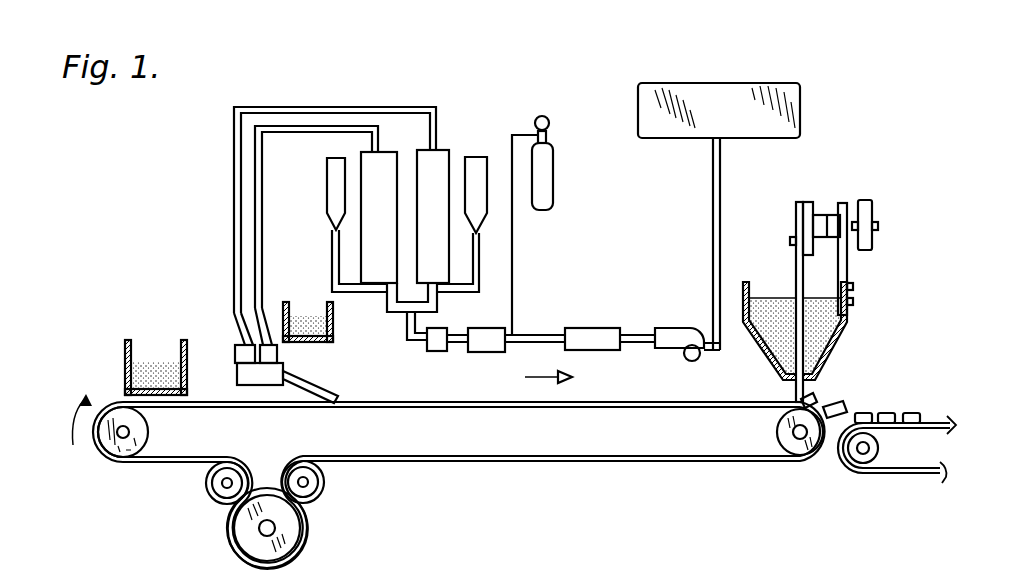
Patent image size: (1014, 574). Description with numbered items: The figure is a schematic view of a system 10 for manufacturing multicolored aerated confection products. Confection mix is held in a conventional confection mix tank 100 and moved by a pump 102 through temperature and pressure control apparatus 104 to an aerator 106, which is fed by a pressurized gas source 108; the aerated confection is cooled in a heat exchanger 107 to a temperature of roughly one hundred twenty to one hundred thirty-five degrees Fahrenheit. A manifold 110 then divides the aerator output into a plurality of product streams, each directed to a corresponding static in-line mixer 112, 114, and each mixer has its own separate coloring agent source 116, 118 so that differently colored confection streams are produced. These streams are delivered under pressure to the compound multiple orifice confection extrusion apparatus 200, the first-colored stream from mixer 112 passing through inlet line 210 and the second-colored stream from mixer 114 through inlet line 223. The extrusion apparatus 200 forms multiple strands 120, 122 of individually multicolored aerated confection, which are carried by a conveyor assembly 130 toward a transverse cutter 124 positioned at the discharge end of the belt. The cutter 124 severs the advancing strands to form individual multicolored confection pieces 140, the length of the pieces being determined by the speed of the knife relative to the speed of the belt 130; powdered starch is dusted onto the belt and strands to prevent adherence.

The system 10 is at (196, 258).
The confection mix tank 100 is at (710, 58).
The pump 102 is at (668, 328).
The temperature and pressure control apparatus 104 is at (598, 328).
The aerator 106 is at (488, 353).
The heat exchanger 107 is at (439, 352).
The pressurized gas source 108 is at (553, 178).
The manifold 110 is at (401, 314).
The static in-line mixer 112 is at (370, 168).
The static in-line mixer 114 is at (425, 160).
The coloring agent source 116 is at (325, 200).
The coloring agent source 118 is at (480, 155).
The strand 120 is at (333, 362).
The strand 122 is at (307, 402).
The transverse cutter 124 is at (846, 320).
The conveyor assembly 130 is at (193, 408).
The confection pieces 140 is at (855, 390).
The compound multiple orifice confection extrusion apparatus 200 is at (253, 381).
The inlet line 210 is at (262, 173).
The inlet line 223 is at (234, 194).